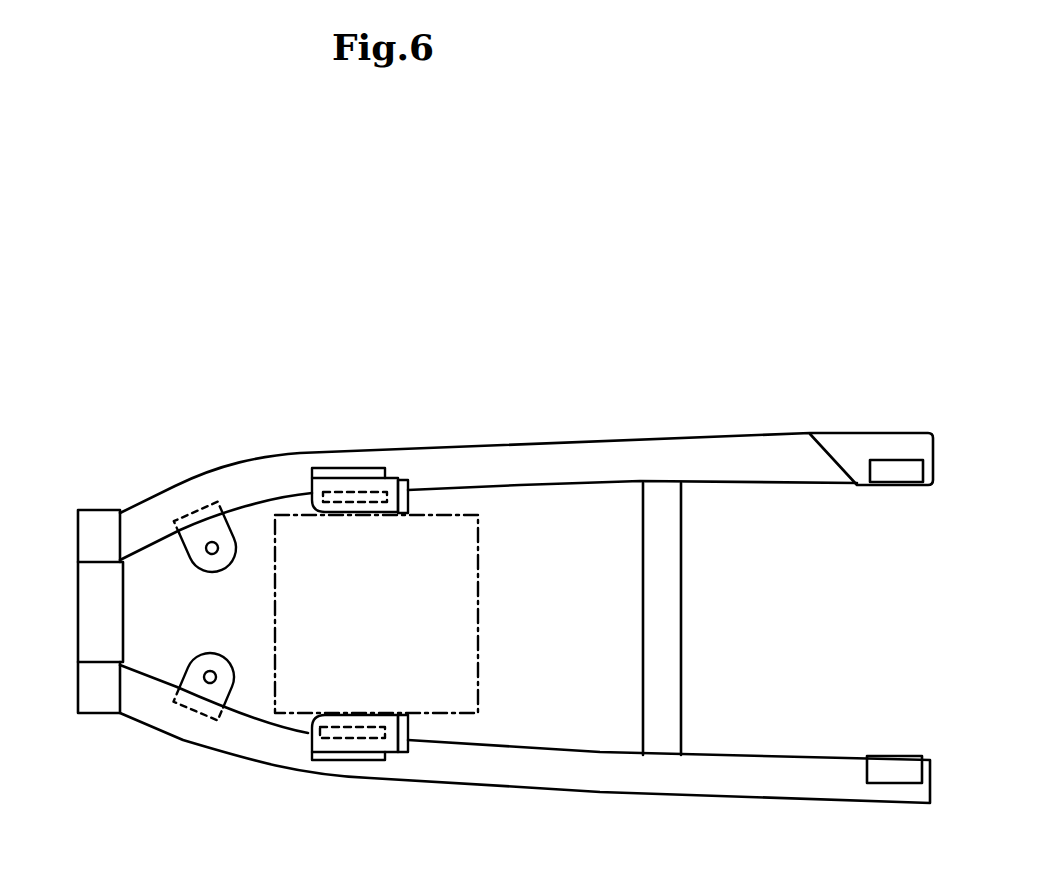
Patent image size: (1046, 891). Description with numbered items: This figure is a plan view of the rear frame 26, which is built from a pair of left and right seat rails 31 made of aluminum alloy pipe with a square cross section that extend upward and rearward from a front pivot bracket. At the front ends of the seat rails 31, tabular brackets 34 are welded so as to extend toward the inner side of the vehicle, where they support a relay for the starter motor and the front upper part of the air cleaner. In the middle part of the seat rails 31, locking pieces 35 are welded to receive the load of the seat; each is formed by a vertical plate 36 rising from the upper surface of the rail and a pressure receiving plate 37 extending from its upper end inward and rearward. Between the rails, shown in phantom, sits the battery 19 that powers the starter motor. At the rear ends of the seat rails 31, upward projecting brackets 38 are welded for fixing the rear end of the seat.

The battery 19 is at (478, 597).
The rear frame 26 is at (505, 544).
The seat rails 31 is at (767, 457).
The tabular brackets 34 is at (195, 567).
The locking pieces 35 is at (330, 463).
The vertical plates 36 is at (338, 522).
The pressure receiving plates 37 is at (365, 487).
The brackets 38 is at (898, 487).